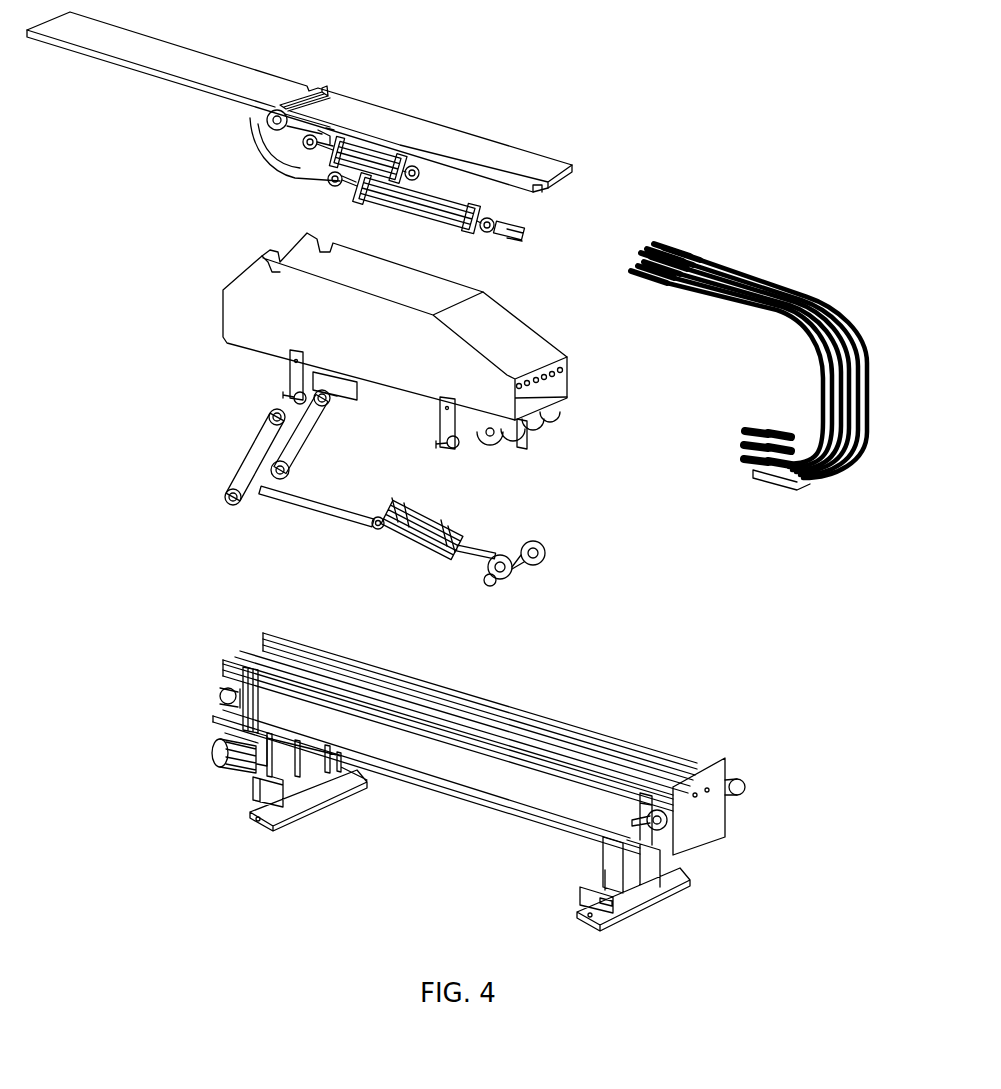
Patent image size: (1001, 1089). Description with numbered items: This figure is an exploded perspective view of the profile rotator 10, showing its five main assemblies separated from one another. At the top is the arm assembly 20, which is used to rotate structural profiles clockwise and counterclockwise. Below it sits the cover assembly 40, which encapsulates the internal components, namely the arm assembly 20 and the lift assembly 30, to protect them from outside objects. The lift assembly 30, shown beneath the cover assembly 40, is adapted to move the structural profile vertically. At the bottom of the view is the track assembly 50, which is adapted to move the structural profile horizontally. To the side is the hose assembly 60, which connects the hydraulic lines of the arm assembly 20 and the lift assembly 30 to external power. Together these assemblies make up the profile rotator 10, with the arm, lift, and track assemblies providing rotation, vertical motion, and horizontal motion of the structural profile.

The profile rotator 10 is at (676, 46).
The arm assembly 20 is at (146, 110).
The lift assembly 30 is at (235, 432).
The cover assembly 40 is at (232, 252).
The track assembly 50 is at (200, 621).
The hose assembly 60 is at (752, 245).